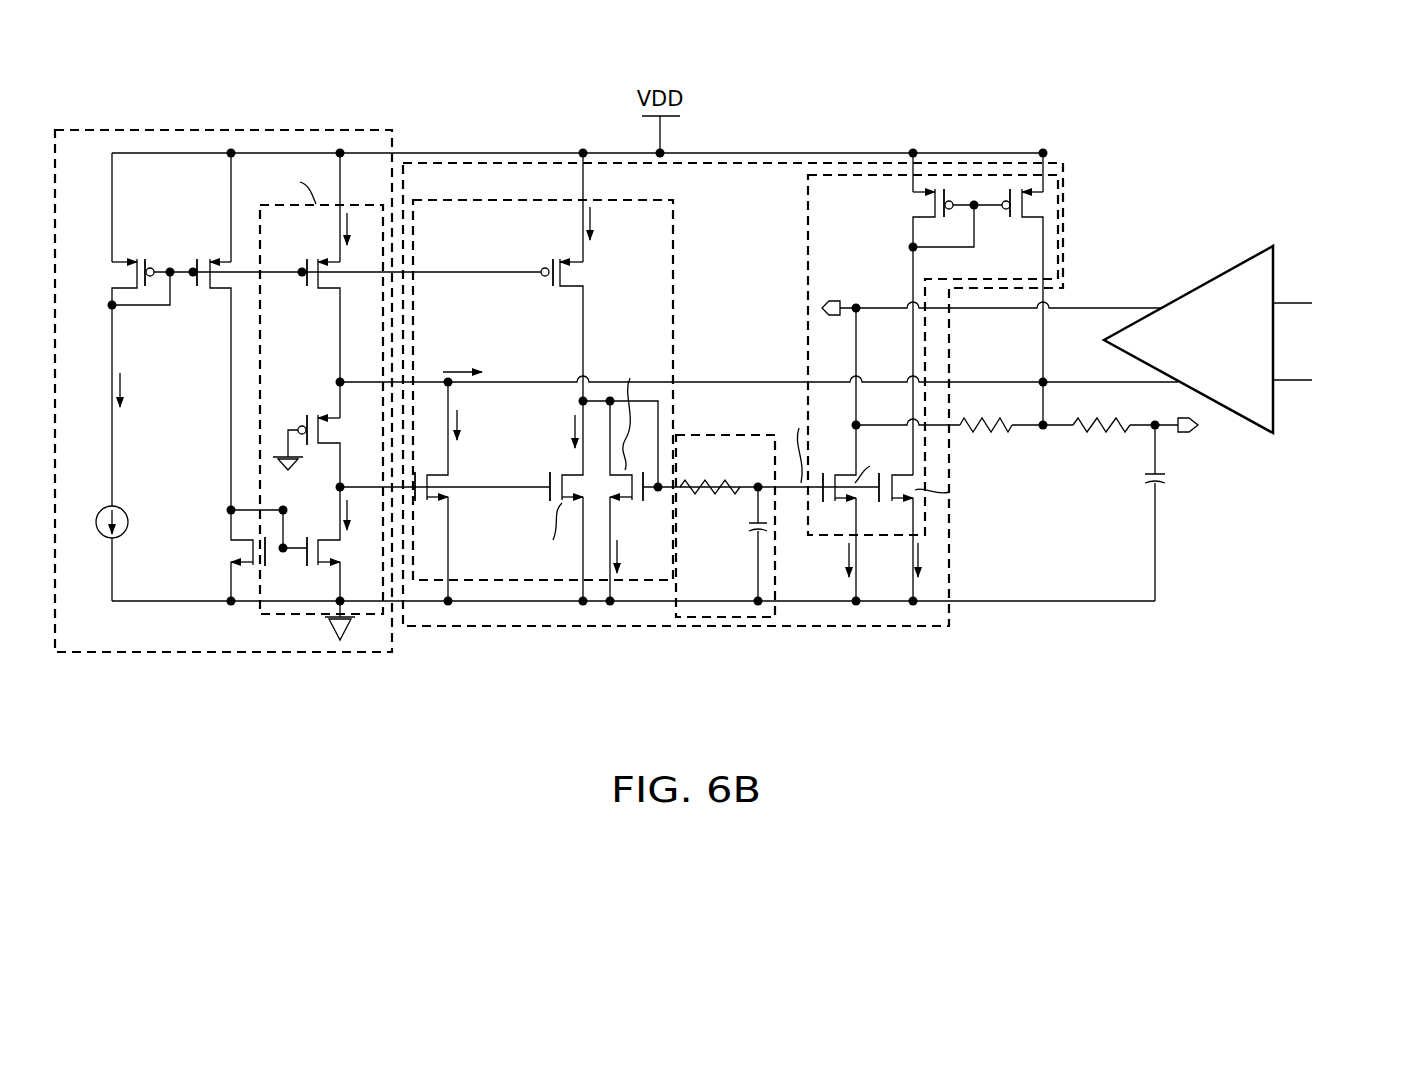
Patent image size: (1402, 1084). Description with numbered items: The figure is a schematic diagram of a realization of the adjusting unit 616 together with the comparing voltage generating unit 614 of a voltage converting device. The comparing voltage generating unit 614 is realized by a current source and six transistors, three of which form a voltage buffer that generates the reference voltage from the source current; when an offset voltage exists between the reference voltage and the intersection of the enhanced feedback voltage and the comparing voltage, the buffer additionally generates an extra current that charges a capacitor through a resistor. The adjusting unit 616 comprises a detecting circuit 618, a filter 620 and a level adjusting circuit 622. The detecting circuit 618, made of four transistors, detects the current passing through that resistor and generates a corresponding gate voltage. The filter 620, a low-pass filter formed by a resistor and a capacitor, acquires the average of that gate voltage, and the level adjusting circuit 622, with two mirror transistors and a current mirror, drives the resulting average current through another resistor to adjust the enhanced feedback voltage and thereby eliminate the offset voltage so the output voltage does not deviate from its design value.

The comparing voltage generating unit 614 is at (203, 130).
The adjusting unit 616 is at (652, 628).
The detecting circuit 618 is at (675, 233).
The filter 620 is at (729, 433).
The level adjusting circuit 622 is at (1062, 210).